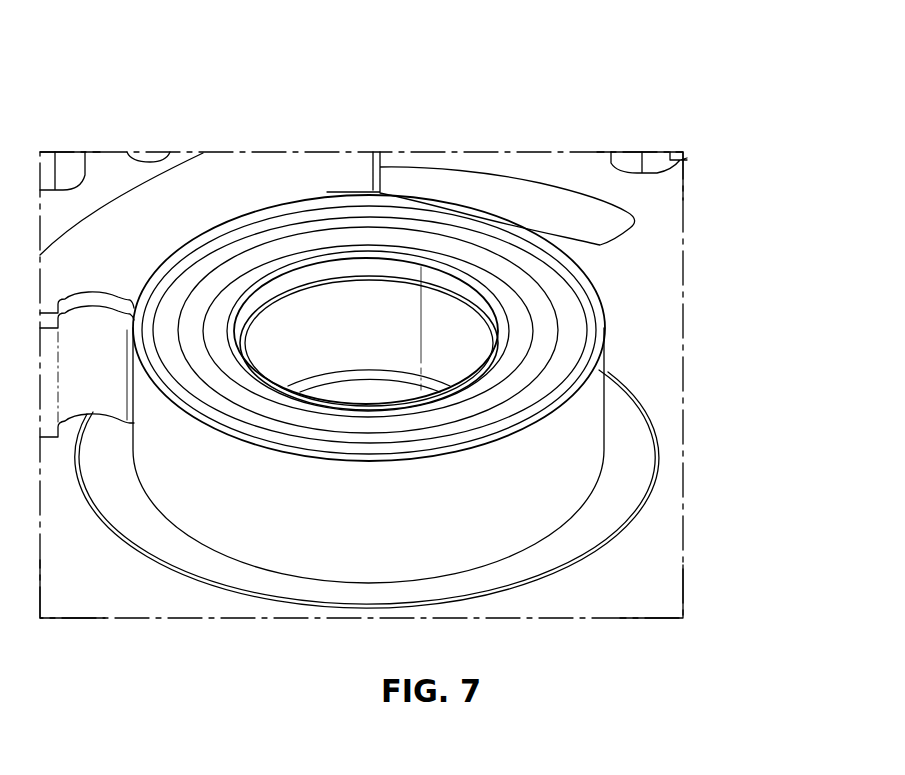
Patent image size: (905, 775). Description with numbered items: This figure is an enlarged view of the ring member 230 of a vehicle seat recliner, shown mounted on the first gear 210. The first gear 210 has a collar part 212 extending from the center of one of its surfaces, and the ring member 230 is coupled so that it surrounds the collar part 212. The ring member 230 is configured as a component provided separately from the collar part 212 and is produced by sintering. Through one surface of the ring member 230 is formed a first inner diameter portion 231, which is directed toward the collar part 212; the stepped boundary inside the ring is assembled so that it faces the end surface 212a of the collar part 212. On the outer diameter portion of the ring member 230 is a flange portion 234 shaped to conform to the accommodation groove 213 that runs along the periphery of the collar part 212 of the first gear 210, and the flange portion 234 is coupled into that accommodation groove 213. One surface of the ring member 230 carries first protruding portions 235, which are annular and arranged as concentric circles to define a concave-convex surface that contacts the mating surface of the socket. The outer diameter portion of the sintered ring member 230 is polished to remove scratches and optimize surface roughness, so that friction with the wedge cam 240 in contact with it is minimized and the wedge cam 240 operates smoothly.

The first gear 210 is at (657, 218).
The collar part 212 is at (357, 387).
The end surface of the collar part 212a is at (380, 372).
The accommodation groove 213 is at (652, 480).
The ring member 230 is at (607, 312).
The first inner diameter portion 231 is at (455, 313).
The flange portion 234 is at (632, 450).
The first protruding portion 235 is at (513, 343).
The wedge cam 240 is at (243, 178).